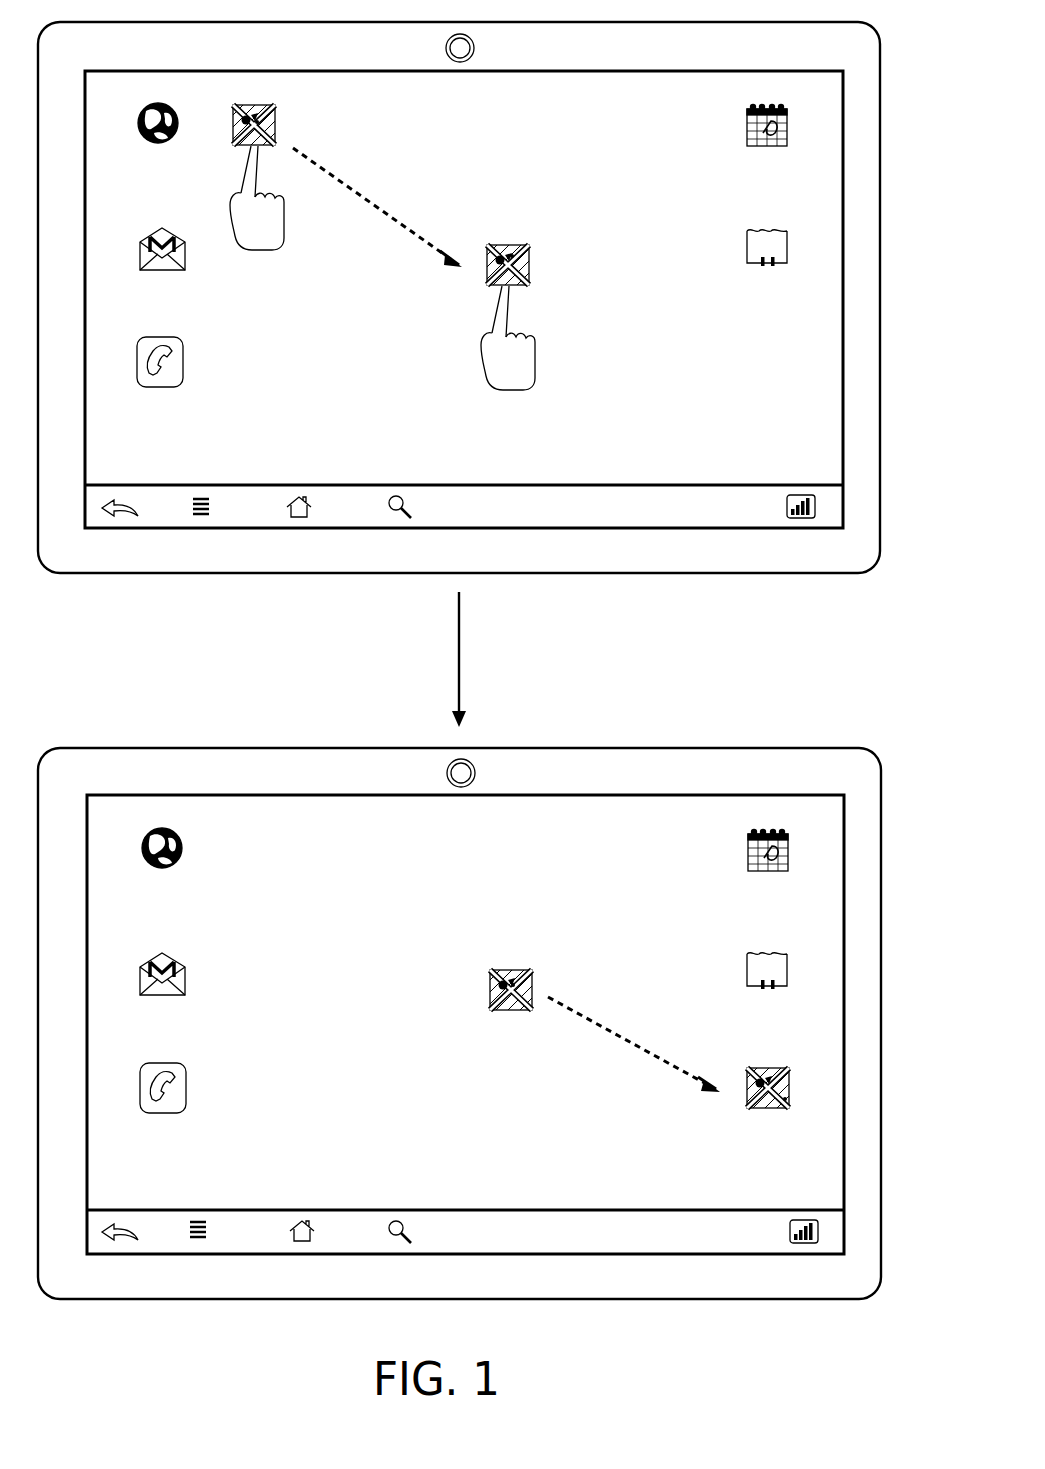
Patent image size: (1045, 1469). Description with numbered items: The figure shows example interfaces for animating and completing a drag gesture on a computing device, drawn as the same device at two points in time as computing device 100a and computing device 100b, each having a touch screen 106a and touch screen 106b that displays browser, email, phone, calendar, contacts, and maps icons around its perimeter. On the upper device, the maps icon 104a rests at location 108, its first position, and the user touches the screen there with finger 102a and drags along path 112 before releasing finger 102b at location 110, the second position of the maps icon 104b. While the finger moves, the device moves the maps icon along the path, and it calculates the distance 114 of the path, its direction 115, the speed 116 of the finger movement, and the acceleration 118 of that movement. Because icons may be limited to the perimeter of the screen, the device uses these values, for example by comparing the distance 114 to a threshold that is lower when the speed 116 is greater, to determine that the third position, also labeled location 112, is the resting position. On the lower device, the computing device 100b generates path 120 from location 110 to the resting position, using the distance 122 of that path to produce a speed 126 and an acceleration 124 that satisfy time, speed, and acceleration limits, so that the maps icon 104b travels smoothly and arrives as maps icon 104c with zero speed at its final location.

The computing device 100a is at (490, 321).
The computing device 100b is at (471, 1004).
The finger 102a is at (256, 256).
The finger 102b is at (541, 342).
The maps icon 104a is at (285, 124).
The maps icon 104b is at (541, 258).
The maps icon 104c is at (736, 1119).
The touch screen 106a is at (641, 69).
The touch screen 106b is at (646, 794).
The location 108 is at (257, 122).
The location 110 is at (512, 256).
The path 112 is at (309, 158).
The distance 114 is at (414, 172).
The direction 115 is at (354, 276).
The speed 116 is at (342, 241).
The acceleration 118 is at (457, 199).
The path 120 is at (586, 1026).
The distance 122 is at (653, 1011).
The acceleration 124 is at (725, 1046).
The speed 126 is at (632, 1094).